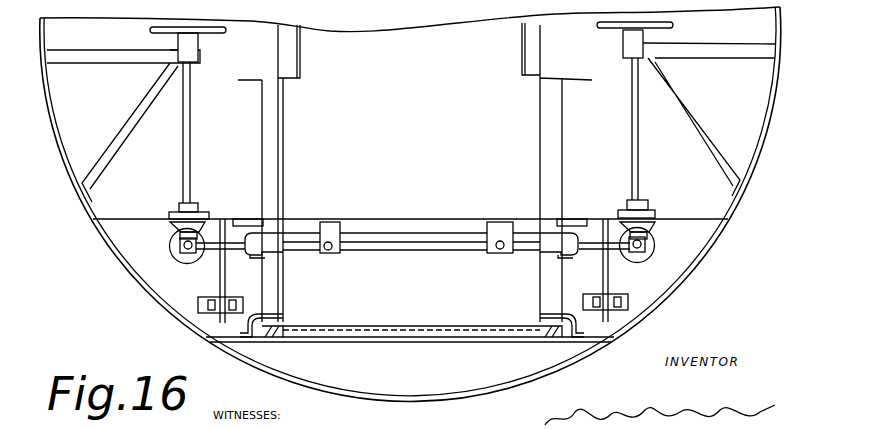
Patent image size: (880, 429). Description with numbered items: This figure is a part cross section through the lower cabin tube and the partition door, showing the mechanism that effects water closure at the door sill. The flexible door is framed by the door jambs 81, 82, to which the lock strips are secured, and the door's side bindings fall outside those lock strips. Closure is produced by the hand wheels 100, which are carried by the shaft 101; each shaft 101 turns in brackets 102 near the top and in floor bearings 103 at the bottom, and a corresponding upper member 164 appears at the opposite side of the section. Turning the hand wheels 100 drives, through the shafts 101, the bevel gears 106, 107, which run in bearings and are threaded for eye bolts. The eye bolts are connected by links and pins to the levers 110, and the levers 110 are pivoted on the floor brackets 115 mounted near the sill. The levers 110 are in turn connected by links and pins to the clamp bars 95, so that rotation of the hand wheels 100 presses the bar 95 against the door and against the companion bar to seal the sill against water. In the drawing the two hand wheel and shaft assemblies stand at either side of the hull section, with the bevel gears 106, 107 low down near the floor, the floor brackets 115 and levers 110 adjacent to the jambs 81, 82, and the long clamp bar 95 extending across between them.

The door jamb 81 is at (284, 124).
The door jamb 82 is at (546, 135).
The clamp bar 95 is at (384, 251).
The hand wheel 100 is at (149, 29).
The shaft 101 is at (191, 124).
The bracket 102 is at (200, 57).
The floor bearing 103 is at (197, 204).
The bevel gear 106 is at (178, 229).
The bevel gear 107 is at (168, 257).
The lever 110 is at (206, 262).
The floor bracket 115 is at (263, 224).
The right upper track bar 164 is at (635, 14).